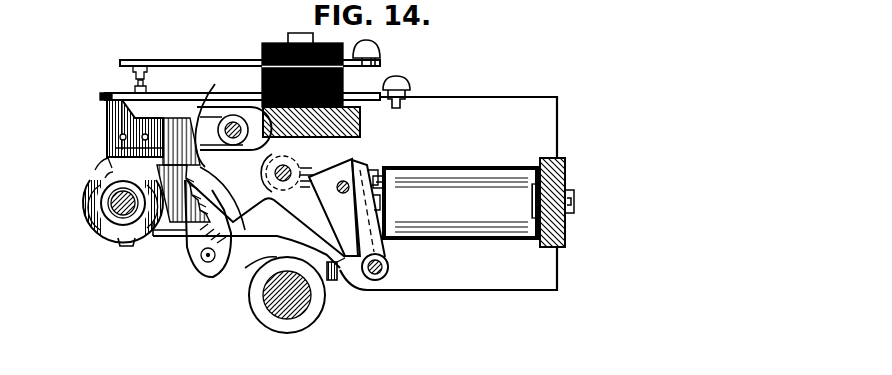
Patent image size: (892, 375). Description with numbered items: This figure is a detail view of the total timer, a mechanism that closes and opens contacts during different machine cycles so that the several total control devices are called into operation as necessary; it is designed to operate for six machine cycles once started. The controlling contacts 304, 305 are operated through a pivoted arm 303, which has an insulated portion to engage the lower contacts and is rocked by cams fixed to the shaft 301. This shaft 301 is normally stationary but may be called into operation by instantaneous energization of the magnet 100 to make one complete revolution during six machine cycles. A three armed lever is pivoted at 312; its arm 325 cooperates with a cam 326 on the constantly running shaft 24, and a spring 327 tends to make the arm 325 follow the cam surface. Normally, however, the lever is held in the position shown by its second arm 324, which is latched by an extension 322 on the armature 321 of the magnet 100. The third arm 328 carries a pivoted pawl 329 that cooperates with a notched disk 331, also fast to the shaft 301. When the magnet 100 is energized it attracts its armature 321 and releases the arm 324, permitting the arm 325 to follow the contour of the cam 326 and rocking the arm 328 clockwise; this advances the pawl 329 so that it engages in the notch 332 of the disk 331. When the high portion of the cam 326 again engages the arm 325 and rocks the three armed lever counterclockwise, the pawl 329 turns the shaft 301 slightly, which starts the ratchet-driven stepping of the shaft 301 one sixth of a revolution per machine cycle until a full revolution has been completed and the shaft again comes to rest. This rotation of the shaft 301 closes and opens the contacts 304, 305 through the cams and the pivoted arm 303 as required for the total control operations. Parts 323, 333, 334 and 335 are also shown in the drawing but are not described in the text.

The constantly running shaft 24 is at (300, 300).
The magnet 100 is at (452, 177).
The shaft 301 is at (128, 215).
The pivoted arm 303 is at (110, 118).
The controlling contact 304 is at (143, 62).
The controlling contact 305 is at (152, 97).
The pivot 312 is at (288, 168).
The armature 321 is at (367, 172).
The extension 322 is at (360, 228).
The lever arm 323 is at (294, 201).
The second arm 324 is at (352, 158).
The arm 325 is at (247, 272).
The cam 326 is at (338, 277).
The spring 327 is at (156, 230).
The third arm 328 is at (240, 182).
The pivoted pawl 329 is at (184, 235).
The notched disk 331 is at (110, 170).
The notch 332 is at (110, 171).
The roller housing 333 is at (84, 210).
The housing tab 334 is at (120, 245).
The lever 335 is at (233, 118).